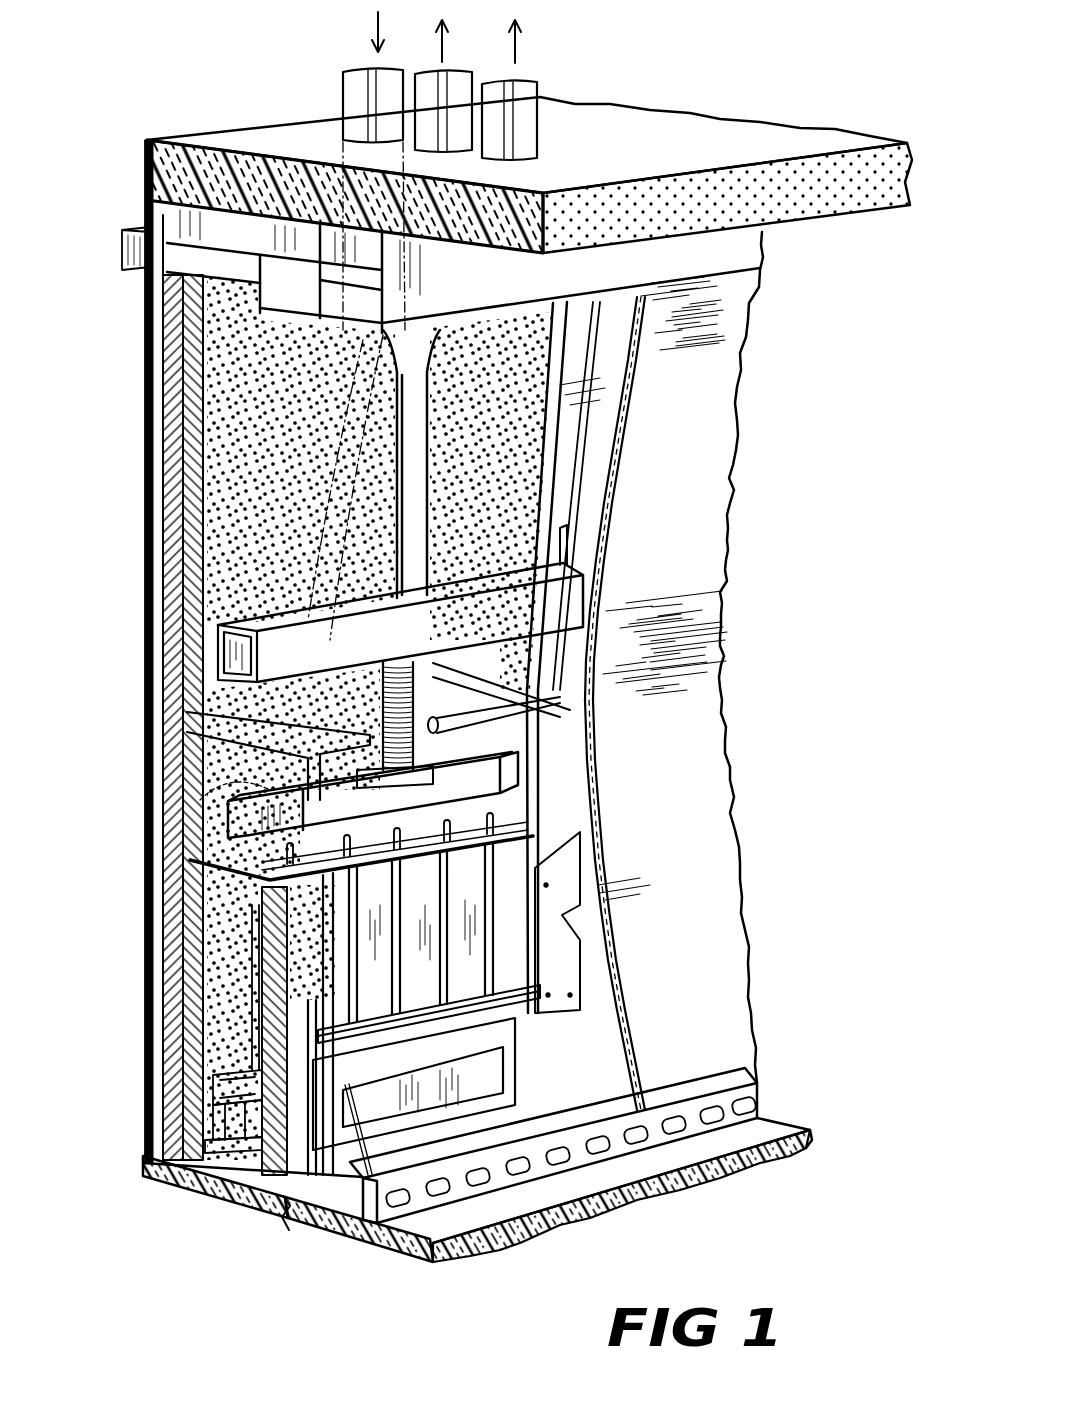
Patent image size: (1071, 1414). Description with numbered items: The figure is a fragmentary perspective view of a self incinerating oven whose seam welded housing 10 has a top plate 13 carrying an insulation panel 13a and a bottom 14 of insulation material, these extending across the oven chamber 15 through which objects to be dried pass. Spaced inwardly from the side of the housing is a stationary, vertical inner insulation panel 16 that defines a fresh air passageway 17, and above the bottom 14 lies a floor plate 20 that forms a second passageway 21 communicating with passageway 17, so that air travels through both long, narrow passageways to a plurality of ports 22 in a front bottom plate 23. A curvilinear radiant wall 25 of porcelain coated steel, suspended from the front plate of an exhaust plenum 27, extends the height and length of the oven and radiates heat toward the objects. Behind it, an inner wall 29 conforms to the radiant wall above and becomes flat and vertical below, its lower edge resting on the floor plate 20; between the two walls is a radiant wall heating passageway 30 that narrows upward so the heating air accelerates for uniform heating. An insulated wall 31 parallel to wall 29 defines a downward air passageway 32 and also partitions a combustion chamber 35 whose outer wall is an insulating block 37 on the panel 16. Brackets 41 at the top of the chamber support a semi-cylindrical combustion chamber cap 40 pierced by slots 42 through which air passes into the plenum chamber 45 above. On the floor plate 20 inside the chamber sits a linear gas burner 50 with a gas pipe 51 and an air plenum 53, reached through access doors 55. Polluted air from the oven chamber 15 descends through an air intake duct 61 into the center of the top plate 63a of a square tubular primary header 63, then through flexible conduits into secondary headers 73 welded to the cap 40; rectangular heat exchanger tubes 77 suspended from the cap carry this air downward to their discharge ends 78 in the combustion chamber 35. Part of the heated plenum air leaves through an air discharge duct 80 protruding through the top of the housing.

The housing 10 is at (140, 350).
The top plate 13 is at (700, 122).
The insulation panel 13a is at (830, 178).
The bottom 14 is at (470, 1240).
The oven chamber 15 is at (762, 617).
The inner insulation panel 16 is at (185, 540).
The passageway 17 is at (158, 447).
The floor plate 20 is at (475, 1150).
The second passageway 21 is at (297, 1222).
The ports 22 is at (640, 1142).
The front bottom plate 23 is at (535, 1217).
The curvilinear radiant wall 25 is at (740, 412).
The exhaust plenum 27 is at (762, 252).
The inner wall 29 is at (578, 866).
The radiant wall heating passageway 30 is at (600, 958).
The insulated wall 31 is at (240, 960).
The passageway 32 is at (212, 1098).
The combustion chamber 35 is at (232, 1020).
The insulating block 37 is at (195, 978).
The combustion chamber cap 40 is at (222, 822).
The brackets 41 is at (230, 882).
The slots 42 is at (430, 815).
The plenum chamber 45 is at (512, 452).
The linear gas burner 50 is at (210, 1142).
The gas pipe 51 is at (205, 1203).
The air plenum 53 is at (190, 1183).
The access doors 55 is at (478, 1088).
The air intake duct 61 is at (420, 420).
The primary header 63 is at (530, 583).
The top plate 63a is at (487, 580).
The secondary header 73 is at (245, 790).
The heat exchanger tubes 77 is at (421, 933).
The discharge end 78 is at (470, 1002).
The air discharge duct 80 is at (468, 92).